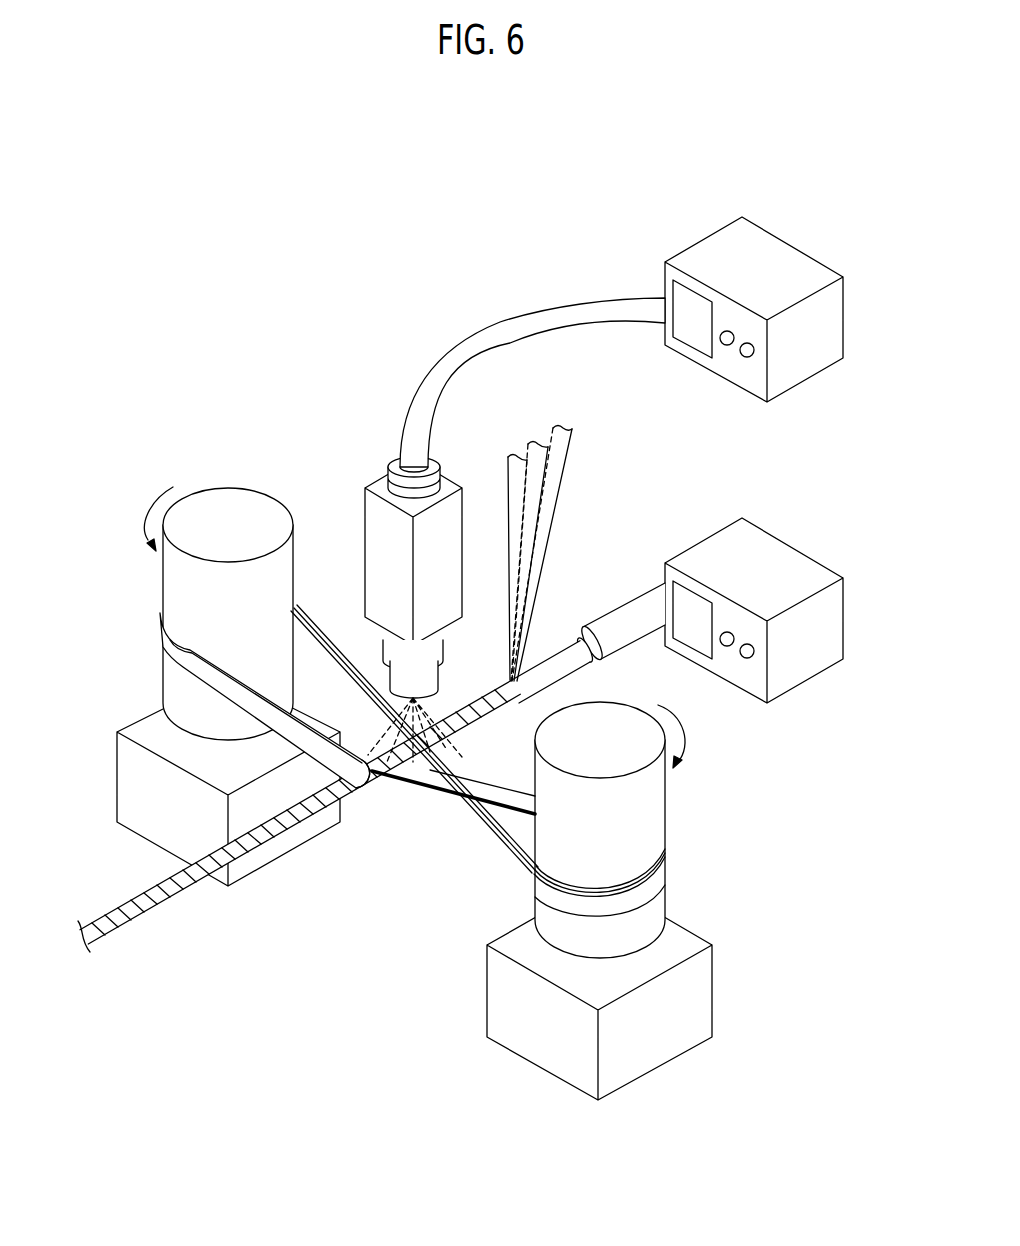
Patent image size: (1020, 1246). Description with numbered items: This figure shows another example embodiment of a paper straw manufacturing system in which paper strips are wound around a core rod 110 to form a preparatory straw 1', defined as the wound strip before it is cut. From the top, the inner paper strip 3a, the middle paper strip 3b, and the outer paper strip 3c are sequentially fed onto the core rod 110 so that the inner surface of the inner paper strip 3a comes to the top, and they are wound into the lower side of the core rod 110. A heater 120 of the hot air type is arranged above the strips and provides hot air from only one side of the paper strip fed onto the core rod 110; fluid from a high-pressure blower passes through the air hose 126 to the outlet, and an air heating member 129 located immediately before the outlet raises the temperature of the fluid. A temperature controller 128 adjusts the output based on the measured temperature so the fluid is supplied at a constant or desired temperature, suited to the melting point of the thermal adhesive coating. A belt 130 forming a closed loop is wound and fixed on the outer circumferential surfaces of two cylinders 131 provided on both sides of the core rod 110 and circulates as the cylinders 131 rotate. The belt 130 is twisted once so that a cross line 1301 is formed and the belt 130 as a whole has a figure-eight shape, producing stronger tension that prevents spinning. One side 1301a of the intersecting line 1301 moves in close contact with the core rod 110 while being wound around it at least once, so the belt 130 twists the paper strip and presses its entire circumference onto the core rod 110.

The preparatory straw 1' is at (299, 836).
The inner paper strip 3a is at (575, 456).
The middle paper strip 3b is at (555, 513).
The outer paper strip 3c is at (531, 563).
The core rod 110 is at (572, 673).
The heater 120 is at (353, 500).
The air hose 126 is at (527, 329).
The temperature controller 128 is at (820, 264).
The air heating member 129 is at (392, 683).
The belt 130 is at (161, 643).
The cylinders 131 is at (170, 568).
The cross line 1301 is at (428, 780).
The one side of the intersecting line 1301a is at (320, 772).